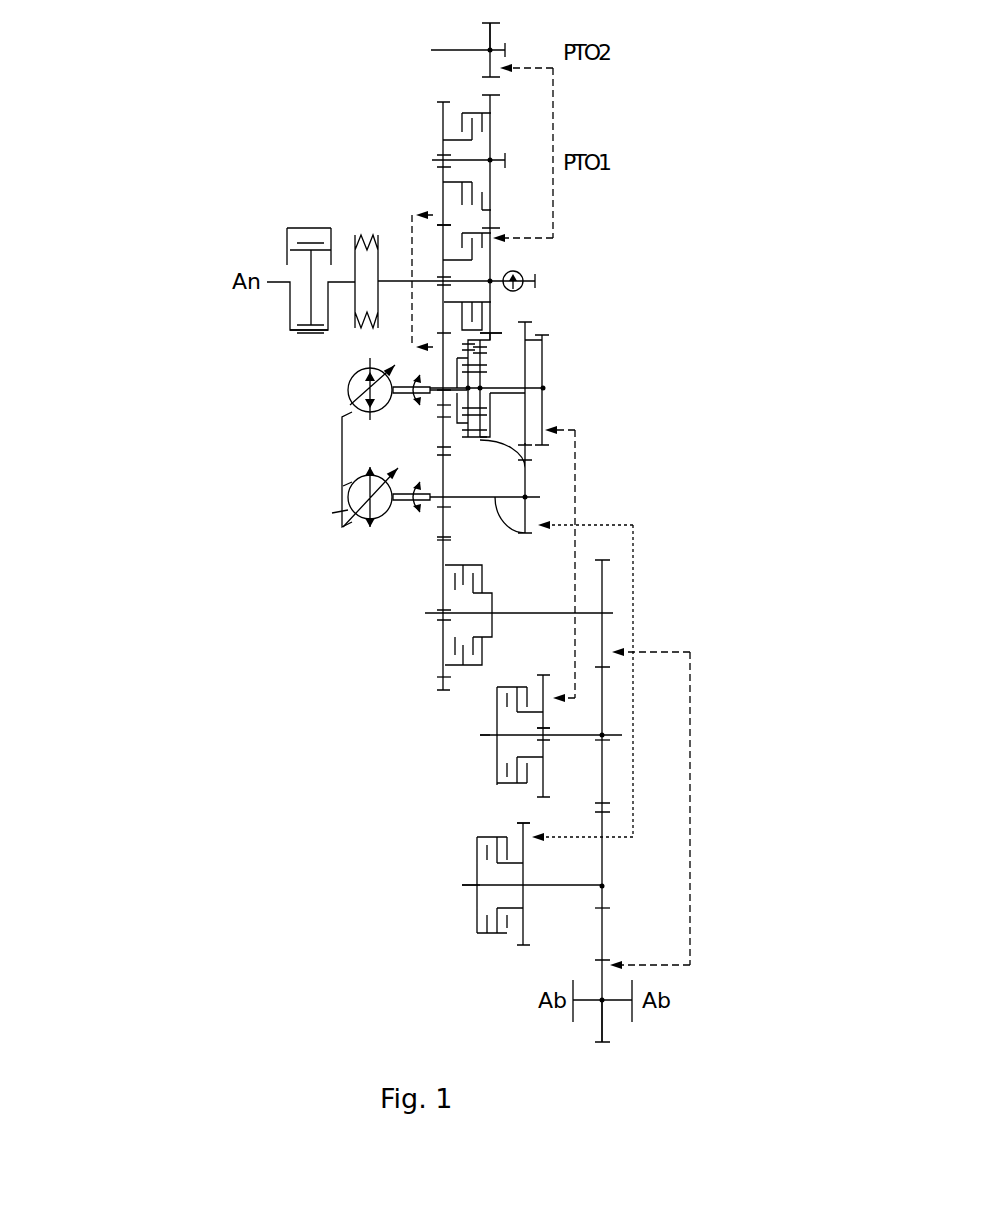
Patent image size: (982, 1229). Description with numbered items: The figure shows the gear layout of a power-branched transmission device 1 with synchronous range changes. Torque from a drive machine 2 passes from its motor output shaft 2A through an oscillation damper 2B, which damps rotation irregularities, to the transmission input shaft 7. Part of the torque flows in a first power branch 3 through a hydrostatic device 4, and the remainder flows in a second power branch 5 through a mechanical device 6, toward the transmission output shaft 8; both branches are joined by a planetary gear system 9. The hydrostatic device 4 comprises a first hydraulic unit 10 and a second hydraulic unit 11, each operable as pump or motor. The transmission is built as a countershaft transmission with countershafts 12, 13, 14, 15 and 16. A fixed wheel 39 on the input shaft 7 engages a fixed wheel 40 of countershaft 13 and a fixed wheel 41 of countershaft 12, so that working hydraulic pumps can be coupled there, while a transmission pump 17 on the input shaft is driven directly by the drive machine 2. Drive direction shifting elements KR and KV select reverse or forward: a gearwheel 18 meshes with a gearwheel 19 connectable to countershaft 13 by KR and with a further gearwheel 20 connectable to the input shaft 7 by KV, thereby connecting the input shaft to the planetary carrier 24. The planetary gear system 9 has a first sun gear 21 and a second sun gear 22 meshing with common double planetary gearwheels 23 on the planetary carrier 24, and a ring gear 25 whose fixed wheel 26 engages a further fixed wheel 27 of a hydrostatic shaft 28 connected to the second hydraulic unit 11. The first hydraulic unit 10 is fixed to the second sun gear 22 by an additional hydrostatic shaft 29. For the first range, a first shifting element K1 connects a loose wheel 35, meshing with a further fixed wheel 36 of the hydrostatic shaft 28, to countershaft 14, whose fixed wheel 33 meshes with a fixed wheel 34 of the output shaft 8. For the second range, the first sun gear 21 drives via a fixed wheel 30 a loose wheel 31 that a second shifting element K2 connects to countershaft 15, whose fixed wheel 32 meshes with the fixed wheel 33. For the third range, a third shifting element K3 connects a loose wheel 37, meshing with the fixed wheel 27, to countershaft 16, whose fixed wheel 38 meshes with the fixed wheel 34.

The transmission device 1 is at (273, 318).
The drive machine 2 is at (317, 225).
The motor output shaft 2A is at (287, 272).
The oscillation damper 2B is at (357, 240).
The first power branch 3 is at (332, 513).
The hydrostatic device 4 is at (340, 402).
The second power branch 5 is at (550, 388).
The mechanical device 6 is at (583, 490).
The transmission input shaft 7 is at (393, 272).
The transmission output shaft 8 is at (613, 1000).
The planetary gear system 9 is at (498, 338).
The first hydraulic unit 10 is at (350, 380).
The second hydraulic unit 11 is at (337, 485).
The countershaft 12 is at (440, 50).
The countershaft 13 is at (495, 160).
The countershaft 14 is at (615, 612).
The countershaft 15 is at (490, 735).
The countershaft 16 is at (468, 885).
The transmission pump 17 is at (535, 280).
The gearwheel 18 is at (440, 363).
The gearwheel 19 is at (443, 108).
The further gearwheel 20 is at (443, 240).
The first sun gear 21 is at (492, 372).
The second sun gear 22 is at (440, 417).
The double planetary gearwheels 23 is at (545, 337).
The planetary carrier 24 is at (443, 507).
The ring gear 25 is at (527, 468).
The fixed wheel 26 is at (527, 408).
The further fixed wheel 27 is at (527, 510).
The hydrostatic shaft 28 is at (636, 538).
The additional hydrostatic shaft 29 is at (440, 410).
The fixed wheel 30 is at (497, 352).
The loose wheel 31 is at (543, 722).
The fixed wheel 32 is at (602, 755).
The fixed wheel 33 is at (605, 628).
The fixed wheel 34 is at (602, 1030).
The loose wheel 35 is at (445, 677).
The further fixed wheel 36 is at (445, 540).
The loose wheel 37 is at (523, 848).
The fixed wheel 38 is at (602, 908).
The fixed wheel 39 is at (493, 257).
The fixed wheel 40 is at (493, 95).
The fixed wheel 41 is at (495, 35).
The first shifting element K1 is at (482, 605).
The second shifting element K2 is at (507, 722).
The third shifting element K3 is at (483, 897).
The drive direction shifting element KR is at (452, 150).
The drive direction shifting element KV is at (458, 290).